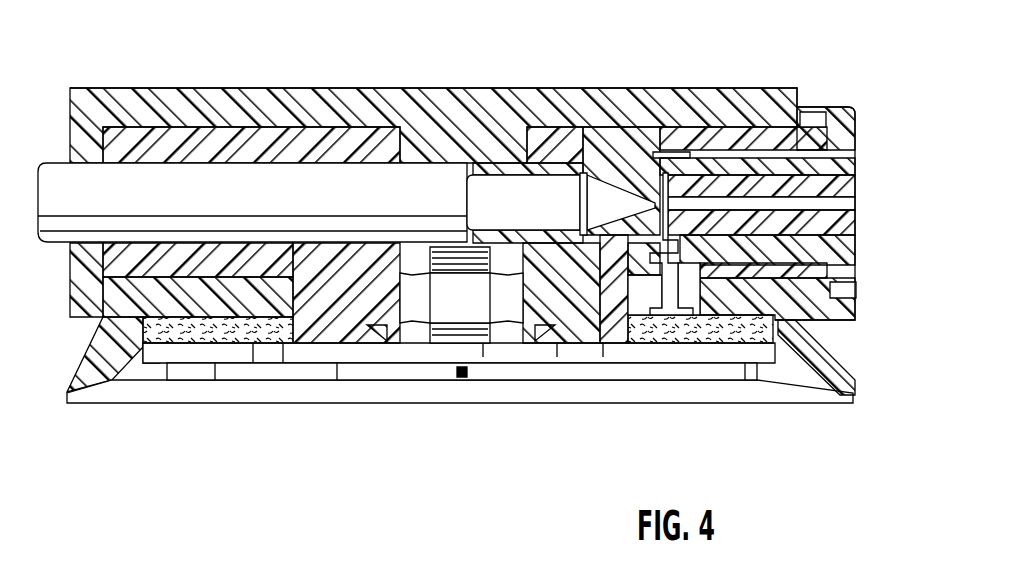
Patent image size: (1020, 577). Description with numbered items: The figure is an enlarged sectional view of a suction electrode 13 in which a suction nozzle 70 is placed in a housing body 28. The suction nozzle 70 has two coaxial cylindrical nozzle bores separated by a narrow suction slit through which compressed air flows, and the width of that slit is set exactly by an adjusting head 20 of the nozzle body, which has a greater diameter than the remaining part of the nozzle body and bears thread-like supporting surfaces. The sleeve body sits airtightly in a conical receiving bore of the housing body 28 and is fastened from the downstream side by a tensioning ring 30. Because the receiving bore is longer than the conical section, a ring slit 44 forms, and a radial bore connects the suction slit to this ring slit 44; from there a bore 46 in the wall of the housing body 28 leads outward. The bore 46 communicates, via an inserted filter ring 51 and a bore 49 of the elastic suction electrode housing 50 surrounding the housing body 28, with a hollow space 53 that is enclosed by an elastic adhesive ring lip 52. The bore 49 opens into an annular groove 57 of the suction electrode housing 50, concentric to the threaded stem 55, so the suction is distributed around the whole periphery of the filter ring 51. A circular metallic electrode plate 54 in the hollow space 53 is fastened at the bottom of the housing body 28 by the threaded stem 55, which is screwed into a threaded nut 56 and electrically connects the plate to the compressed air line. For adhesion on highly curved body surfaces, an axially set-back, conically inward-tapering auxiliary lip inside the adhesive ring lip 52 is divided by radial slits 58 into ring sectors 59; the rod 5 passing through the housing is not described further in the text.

The suction electrode 13 is at (393, 76).
The suction electrode housing 50 is at (170, 100).
The suction nozzle 70 is at (617, 152).
The housing body 28 is at (652, 133).
The ring slit 44 is at (723, 95).
The tensioning ring 30 is at (840, 130).
The adjusting head 20 is at (855, 180).
The rod 5 is at (57, 233).
The annular groove 57 is at (250, 280).
The threaded stem 55 is at (447, 257).
The nut 56 is at (503, 280).
The adhesive ring lip 52 is at (115, 395).
The filter ring 51 is at (182, 395).
The ring sectors 59 is at (218, 377).
The radial slits 58 is at (242, 378).
The hollow space 53 is at (393, 392).
The electrode plate 54 is at (530, 373).
The bore 49 is at (655, 293).
The bore 46 is at (705, 285).